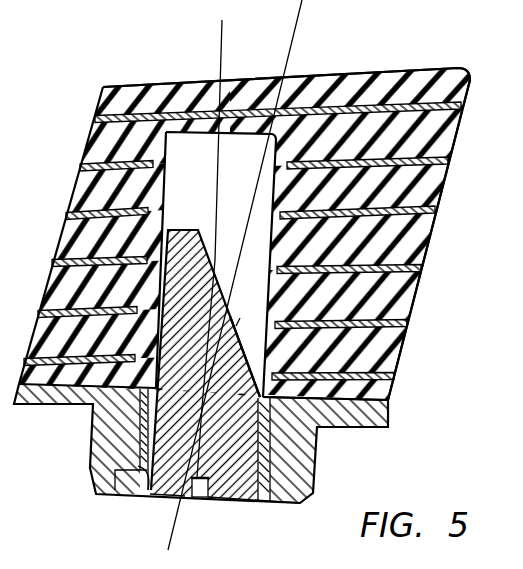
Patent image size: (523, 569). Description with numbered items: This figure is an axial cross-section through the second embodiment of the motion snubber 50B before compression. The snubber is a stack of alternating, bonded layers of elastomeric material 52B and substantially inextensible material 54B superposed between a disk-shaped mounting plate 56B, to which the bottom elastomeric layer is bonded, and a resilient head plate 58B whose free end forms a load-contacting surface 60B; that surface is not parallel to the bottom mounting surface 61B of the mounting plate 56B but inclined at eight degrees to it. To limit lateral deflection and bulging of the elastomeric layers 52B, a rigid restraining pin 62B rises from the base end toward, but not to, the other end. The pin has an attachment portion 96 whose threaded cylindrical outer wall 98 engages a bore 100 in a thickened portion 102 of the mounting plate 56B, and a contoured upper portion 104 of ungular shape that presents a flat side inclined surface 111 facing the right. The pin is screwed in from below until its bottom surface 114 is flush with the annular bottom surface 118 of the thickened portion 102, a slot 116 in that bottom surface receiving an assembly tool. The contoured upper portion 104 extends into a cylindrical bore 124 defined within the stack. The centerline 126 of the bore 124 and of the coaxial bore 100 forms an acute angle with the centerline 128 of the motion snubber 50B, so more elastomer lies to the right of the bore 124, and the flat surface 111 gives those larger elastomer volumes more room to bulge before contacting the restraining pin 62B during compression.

The motion snubber 50B is at (299, 64).
The layers of elastomeric material 52B is at (410, 308).
The layers of substantially inextensible material 54B is at (393, 384).
The mounting plate 56B is at (52, 408).
The head plate 58B is at (114, 87).
The load-contacting surface 60B is at (417, 68).
The bottom mounting surface 61B is at (363, 430).
The restraining pin 62B is at (238, 370).
The attachment portion 96 is at (248, 501).
The threaded cylindrical outer wall 98 is at (313, 480).
The bore 100 is at (147, 496).
The thickened portion 102 is at (88, 468).
The contoured upper portion 104 is at (187, 229).
The flat side inclined surface 111 is at (238, 326).
The bottom surface 114 is at (165, 498).
The slot 116 is at (208, 500).
The annular bottom surface 118 is at (294, 506).
The bore 124 is at (162, 154).
The centerline of the bore 126 is at (222, 52).
The centerline of the motion snubber 128 is at (292, 17).